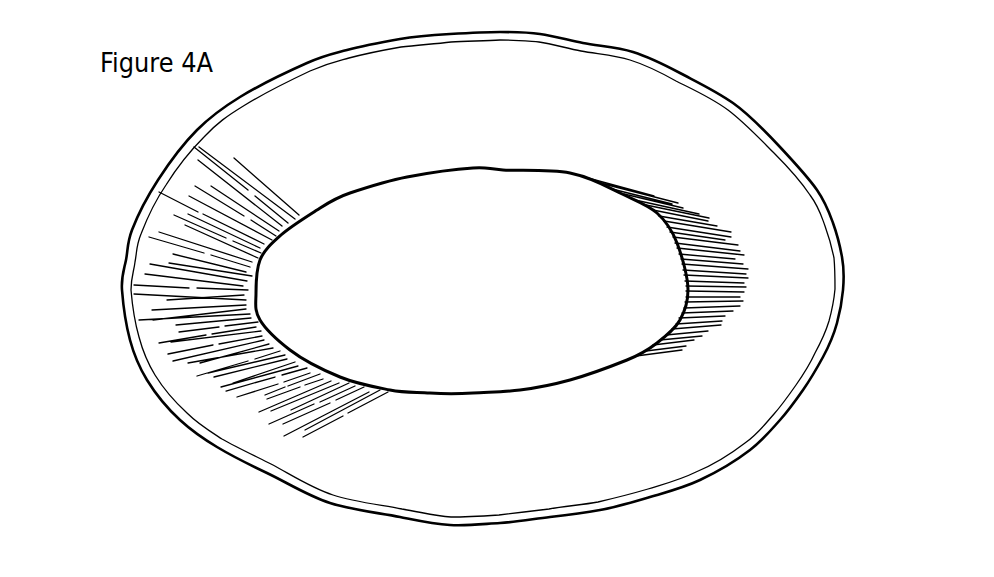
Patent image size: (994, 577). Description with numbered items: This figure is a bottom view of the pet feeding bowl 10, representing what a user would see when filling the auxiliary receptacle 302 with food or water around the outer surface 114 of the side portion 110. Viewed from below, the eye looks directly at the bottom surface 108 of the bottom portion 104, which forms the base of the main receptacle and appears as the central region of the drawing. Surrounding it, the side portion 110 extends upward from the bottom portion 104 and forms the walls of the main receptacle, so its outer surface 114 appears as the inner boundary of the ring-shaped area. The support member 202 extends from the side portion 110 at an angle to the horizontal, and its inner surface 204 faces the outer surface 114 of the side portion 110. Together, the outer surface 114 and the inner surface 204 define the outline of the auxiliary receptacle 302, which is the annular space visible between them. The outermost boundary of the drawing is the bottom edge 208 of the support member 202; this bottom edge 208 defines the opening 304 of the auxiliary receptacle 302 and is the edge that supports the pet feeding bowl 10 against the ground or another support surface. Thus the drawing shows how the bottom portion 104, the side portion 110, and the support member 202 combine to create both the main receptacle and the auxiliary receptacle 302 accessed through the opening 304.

The pet feeding bowl 10 is at (446, 282).
The auxiliary receptacle 302 is at (630, 106).
The bottom edge 208 is at (735, 108).
The side portion 110 is at (360, 186).
The bottom portion 104 is at (513, 203).
The bottom surface 108 is at (489, 288).
The outer surface 114 is at (627, 362).
The inner surface 204 is at (503, 472).
The support member 202 is at (658, 456).
The opening 304 is at (180, 422).